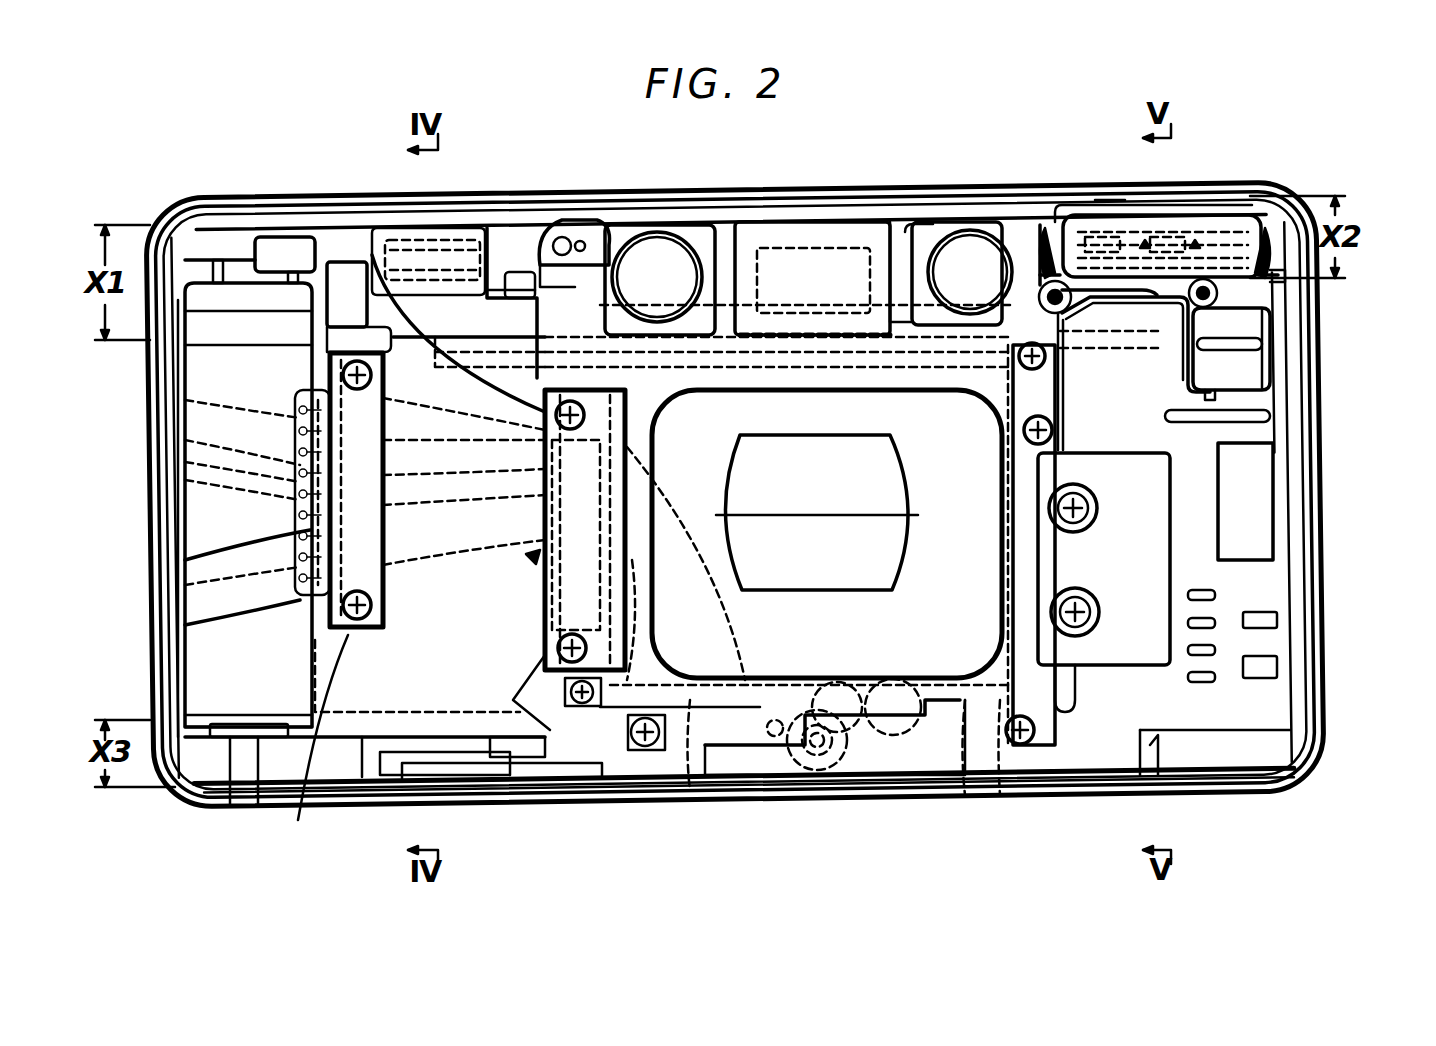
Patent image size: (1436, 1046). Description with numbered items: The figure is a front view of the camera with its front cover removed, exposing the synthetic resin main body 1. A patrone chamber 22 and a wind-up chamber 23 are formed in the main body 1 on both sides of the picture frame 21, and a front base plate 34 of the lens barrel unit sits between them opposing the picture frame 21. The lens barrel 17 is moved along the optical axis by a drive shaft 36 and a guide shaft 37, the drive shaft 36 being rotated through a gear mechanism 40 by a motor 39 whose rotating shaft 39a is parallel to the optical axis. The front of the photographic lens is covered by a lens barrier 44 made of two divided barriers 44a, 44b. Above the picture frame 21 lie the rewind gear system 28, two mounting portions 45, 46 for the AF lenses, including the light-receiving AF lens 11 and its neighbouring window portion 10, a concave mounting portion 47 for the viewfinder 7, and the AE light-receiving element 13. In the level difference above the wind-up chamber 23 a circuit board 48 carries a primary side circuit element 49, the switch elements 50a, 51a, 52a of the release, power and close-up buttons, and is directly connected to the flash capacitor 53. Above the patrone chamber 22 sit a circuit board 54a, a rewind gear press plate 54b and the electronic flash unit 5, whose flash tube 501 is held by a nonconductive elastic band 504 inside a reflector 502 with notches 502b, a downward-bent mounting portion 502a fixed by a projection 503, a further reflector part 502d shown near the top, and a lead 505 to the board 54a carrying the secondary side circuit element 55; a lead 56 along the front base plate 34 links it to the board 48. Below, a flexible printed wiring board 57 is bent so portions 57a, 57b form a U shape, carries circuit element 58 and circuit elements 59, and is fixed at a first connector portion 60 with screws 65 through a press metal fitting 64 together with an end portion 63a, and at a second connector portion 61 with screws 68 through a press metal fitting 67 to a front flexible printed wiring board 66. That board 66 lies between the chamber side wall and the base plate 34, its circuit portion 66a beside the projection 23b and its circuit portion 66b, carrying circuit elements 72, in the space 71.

The main body 1 is at (1292, 340).
The electronic flash unit 5 is at (1203, 238).
The viewfinder 7 is at (780, 240).
The window portion 10 is at (670, 253).
The light-receiving AF lens 11 is at (945, 234).
The AE light-receiving element 13 is at (564, 237).
The lens barrel 17 is at (710, 402).
The picture frame 21 is at (673, 684).
The patrone chamber 22 is at (1282, 403).
The wind-up chamber 23 is at (310, 662).
The projection 23b is at (300, 575).
The rewind gear system 28 is at (723, 233).
The front base plate 34 is at (578, 241).
The drive shaft 36 is at (880, 738).
The guide shaft 37 is at (965, 738).
The motor 39 is at (721, 768).
The rotating shaft 39a is at (778, 738).
The gear mechanism 40 is at (830, 768).
The lens barrier 44 is at (823, 482).
The divided barrier 44a is at (880, 575).
The divided barrier 44b is at (872, 445).
The mounting portion 45 is at (655, 257).
The mounting portion 46 is at (953, 237).
The mounting portion 47 is at (862, 224).
The circuit board 48 is at (258, 236).
The primary side circuit element 49 is at (342, 270).
The switch element 50a is at (460, 238).
The switch element 51a is at (400, 240).
The switch element 52a is at (560, 228).
The flash capacitor 53 is at (200, 512).
The circuit board 54a is at (1258, 270).
The rewind gear press plate 54b is at (1268, 282).
The secondary side circuit element 55 is at (1140, 242).
The lead 56 is at (1040, 245).
The flexible printed wiring board 57 is at (395, 702).
The portion 57a is at (243, 760).
The portion 57b is at (270, 772).
The circuit element 58 is at (330, 773).
The circuit elements 59 is at (1265, 508).
The first connector portion 60 is at (335, 603).
The second connector portion 61 is at (537, 559).
The end portion 63a is at (310, 444).
The press metal fitting 64 is at (356, 516).
The screws 65 is at (344, 348).
The front flexible printed wiring board 66 is at (545, 615).
The circuit portion 66a is at (623, 658).
The circuit portion 66b is at (753, 708).
The press metal fitting 67 is at (365, 541).
The screws 68 is at (374, 262).
The space 71 is at (310, 471).
The circuit elements 72 is at (310, 413).
The flash tube 501 is at (1185, 234).
The reflector 502 is at (1245, 290).
The mounting portion 502a is at (1203, 295).
The notches 502b is at (1058, 220).
The holder top 502d is at (1097, 197).
The projection 503 is at (1240, 302).
The nonconductive elastic band 504 is at (1045, 238).
The lead 505 is at (1053, 245).